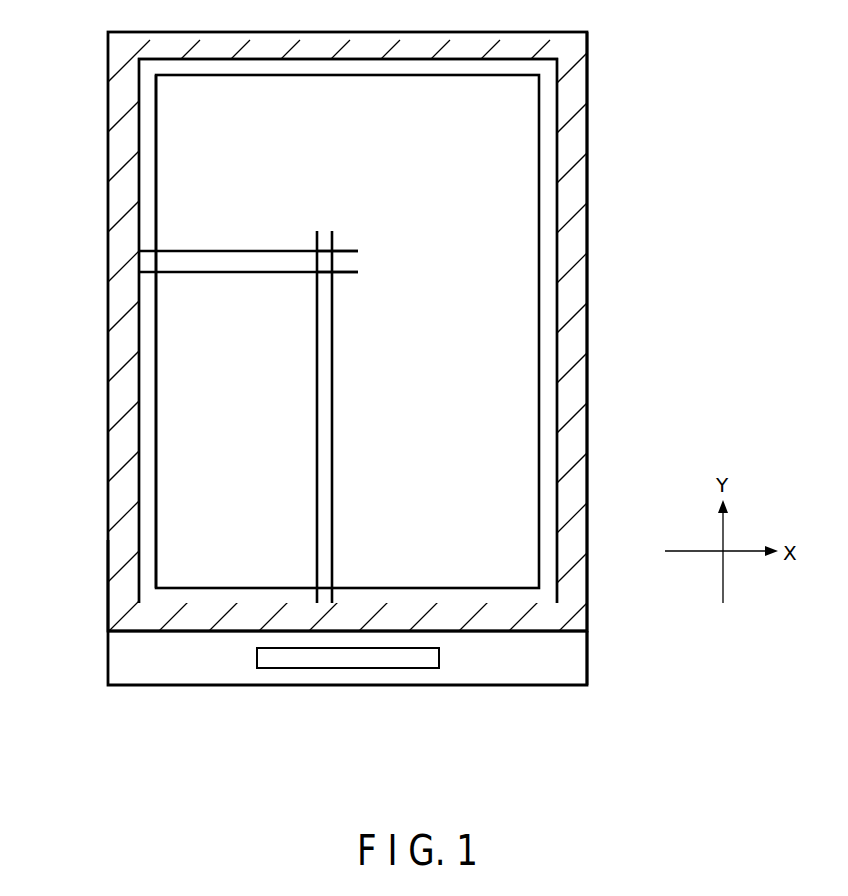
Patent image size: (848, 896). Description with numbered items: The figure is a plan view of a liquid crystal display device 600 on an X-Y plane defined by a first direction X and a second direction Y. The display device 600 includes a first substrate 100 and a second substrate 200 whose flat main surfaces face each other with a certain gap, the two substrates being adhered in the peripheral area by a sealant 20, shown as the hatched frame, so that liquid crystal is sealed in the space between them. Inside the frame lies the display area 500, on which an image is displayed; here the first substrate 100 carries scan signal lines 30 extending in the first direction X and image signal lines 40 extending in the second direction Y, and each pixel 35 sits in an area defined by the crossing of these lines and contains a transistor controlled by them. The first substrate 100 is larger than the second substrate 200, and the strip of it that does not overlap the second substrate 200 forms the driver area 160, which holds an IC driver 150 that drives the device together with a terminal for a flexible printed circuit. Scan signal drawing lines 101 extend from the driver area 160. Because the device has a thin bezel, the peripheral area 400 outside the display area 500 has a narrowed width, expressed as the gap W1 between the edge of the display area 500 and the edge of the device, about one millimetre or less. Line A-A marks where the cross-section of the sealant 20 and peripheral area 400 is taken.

The sealant 20 is at (575, 232).
The scan signal lines 30 is at (228, 272).
The pixels 35 is at (325, 261).
The image signal lines 40 is at (334, 367).
The first substrate 100 is at (587, 658).
The scan signal drawing lines 101 is at (137, 293).
The IC driver 150 is at (372, 658).
The driver area 160 is at (518, 668).
The second substrate 200 is at (587, 425).
The peripheral area 400 is at (137, 222).
The display area 500 is at (520, 313).
The display device 600 is at (98, 588).
The gap W1 is at (203, 175).
The line A- A is at (148, 414).